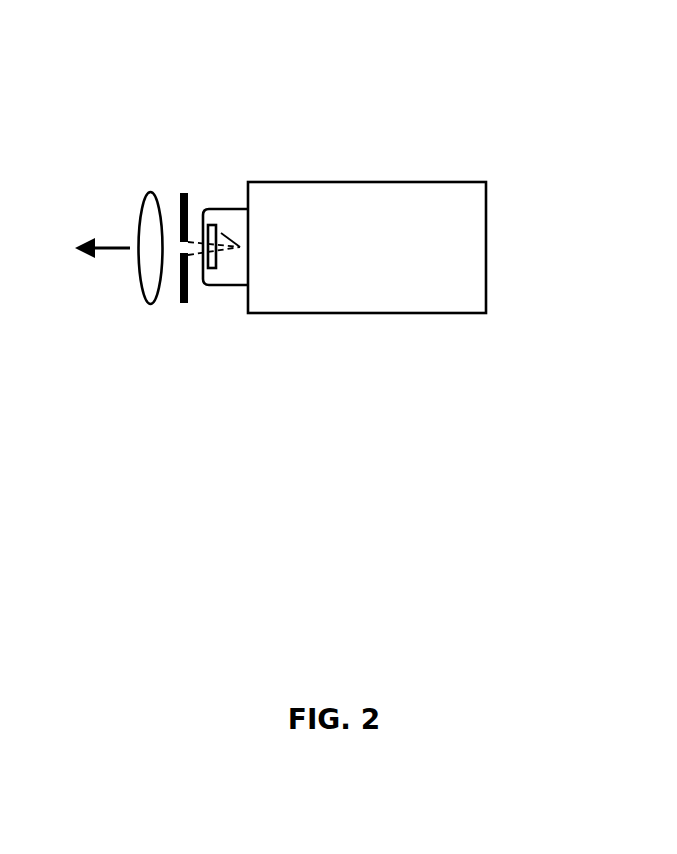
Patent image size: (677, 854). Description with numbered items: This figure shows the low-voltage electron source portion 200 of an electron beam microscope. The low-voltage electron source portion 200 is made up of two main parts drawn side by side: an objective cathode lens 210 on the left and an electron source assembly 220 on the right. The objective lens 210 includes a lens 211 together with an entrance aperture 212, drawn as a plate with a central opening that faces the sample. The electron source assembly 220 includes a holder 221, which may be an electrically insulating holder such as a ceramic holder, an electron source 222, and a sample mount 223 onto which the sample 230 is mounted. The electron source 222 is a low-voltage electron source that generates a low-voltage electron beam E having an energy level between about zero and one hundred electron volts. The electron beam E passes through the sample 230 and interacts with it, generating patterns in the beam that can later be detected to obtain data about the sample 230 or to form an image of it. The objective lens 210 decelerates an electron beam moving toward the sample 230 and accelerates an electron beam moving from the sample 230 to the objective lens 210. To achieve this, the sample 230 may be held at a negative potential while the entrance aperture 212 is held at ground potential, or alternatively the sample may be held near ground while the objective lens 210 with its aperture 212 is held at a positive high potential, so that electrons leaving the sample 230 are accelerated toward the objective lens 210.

The low-voltage electron source portion 200 is at (548, 409).
The objective cathode lens 210 is at (75, 133).
The lens 211 is at (140, 222).
The entrance aperture 212 is at (180, 193).
The electron source assembly 220 is at (395, 94).
The holder 221 is at (486, 203).
The electron source 222 is at (240, 247).
The sample mount 223 is at (208, 284).
The sample 230 is at (215, 212).
The low-voltage electron beam E is at (240, 247).